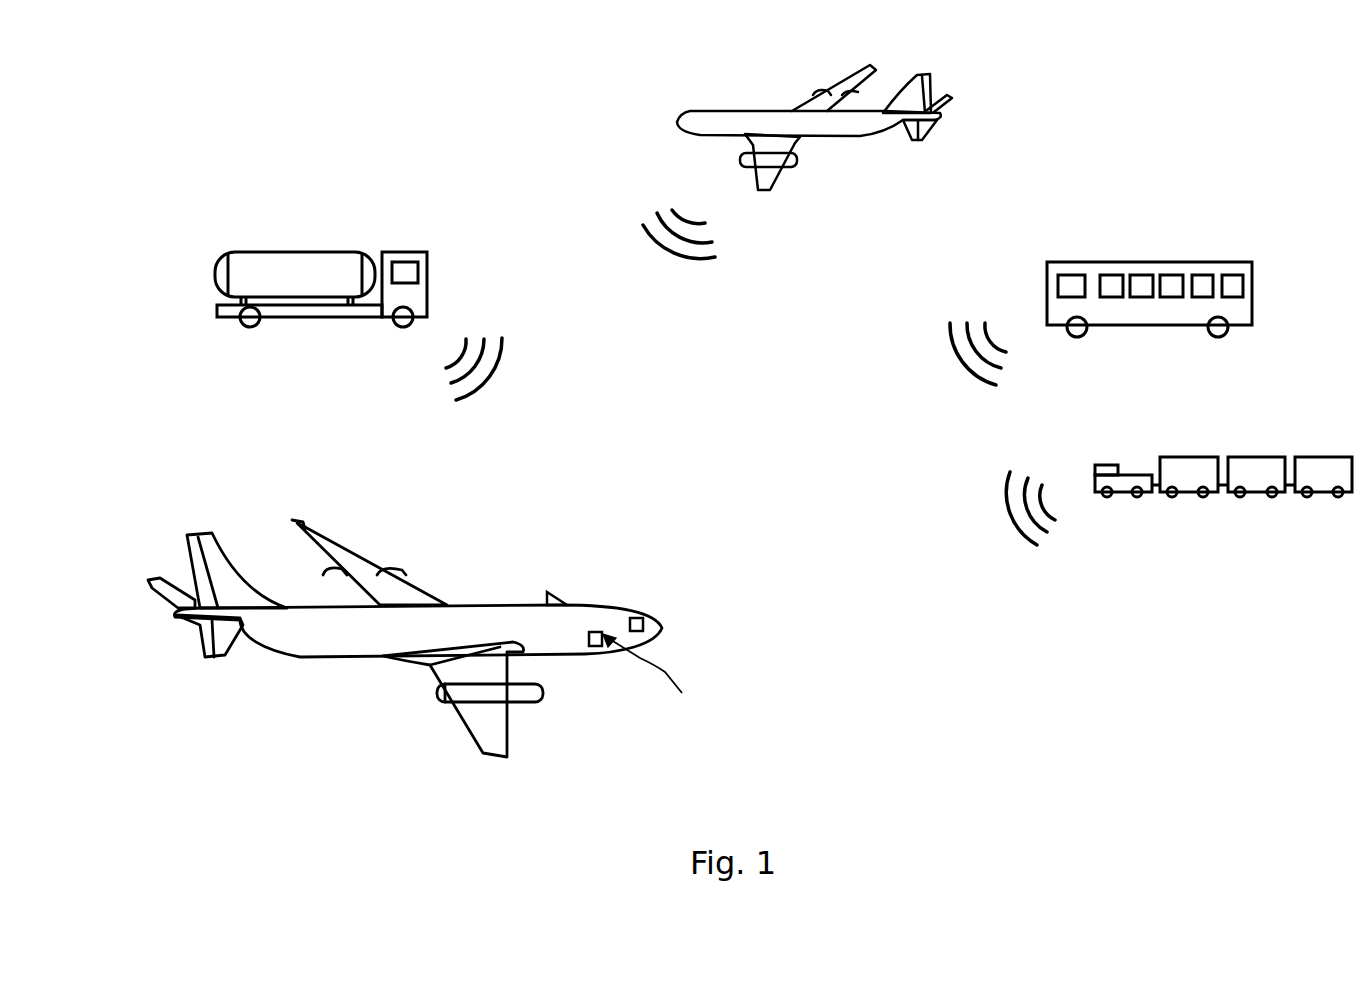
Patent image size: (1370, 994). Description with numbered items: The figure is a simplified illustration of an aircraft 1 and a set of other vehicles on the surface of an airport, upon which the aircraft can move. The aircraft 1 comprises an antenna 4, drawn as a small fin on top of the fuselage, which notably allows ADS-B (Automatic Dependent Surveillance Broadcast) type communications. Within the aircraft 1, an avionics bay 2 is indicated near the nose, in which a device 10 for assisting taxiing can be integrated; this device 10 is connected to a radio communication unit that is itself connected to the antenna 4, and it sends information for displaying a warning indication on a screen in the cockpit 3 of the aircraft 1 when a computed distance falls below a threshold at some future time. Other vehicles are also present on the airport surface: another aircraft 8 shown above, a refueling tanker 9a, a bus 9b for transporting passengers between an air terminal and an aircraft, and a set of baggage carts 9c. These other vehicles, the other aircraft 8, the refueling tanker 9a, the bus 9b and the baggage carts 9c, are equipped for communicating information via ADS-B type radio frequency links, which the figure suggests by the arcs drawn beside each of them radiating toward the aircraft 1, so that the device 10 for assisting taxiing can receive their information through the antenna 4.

The aircraft 1 is at (333, 658).
The avionics bay 2 is at (595, 647).
The cockpit 3 is at (645, 615).
The antenna 4 is at (562, 596).
The another aircraft 8 is at (690, 115).
The refueling tanker 9a is at (282, 252).
The bus 9b is at (1143, 262).
The set of baggage carts 9c is at (1313, 457).
The device for assisting taxiing 10 is at (654, 681).